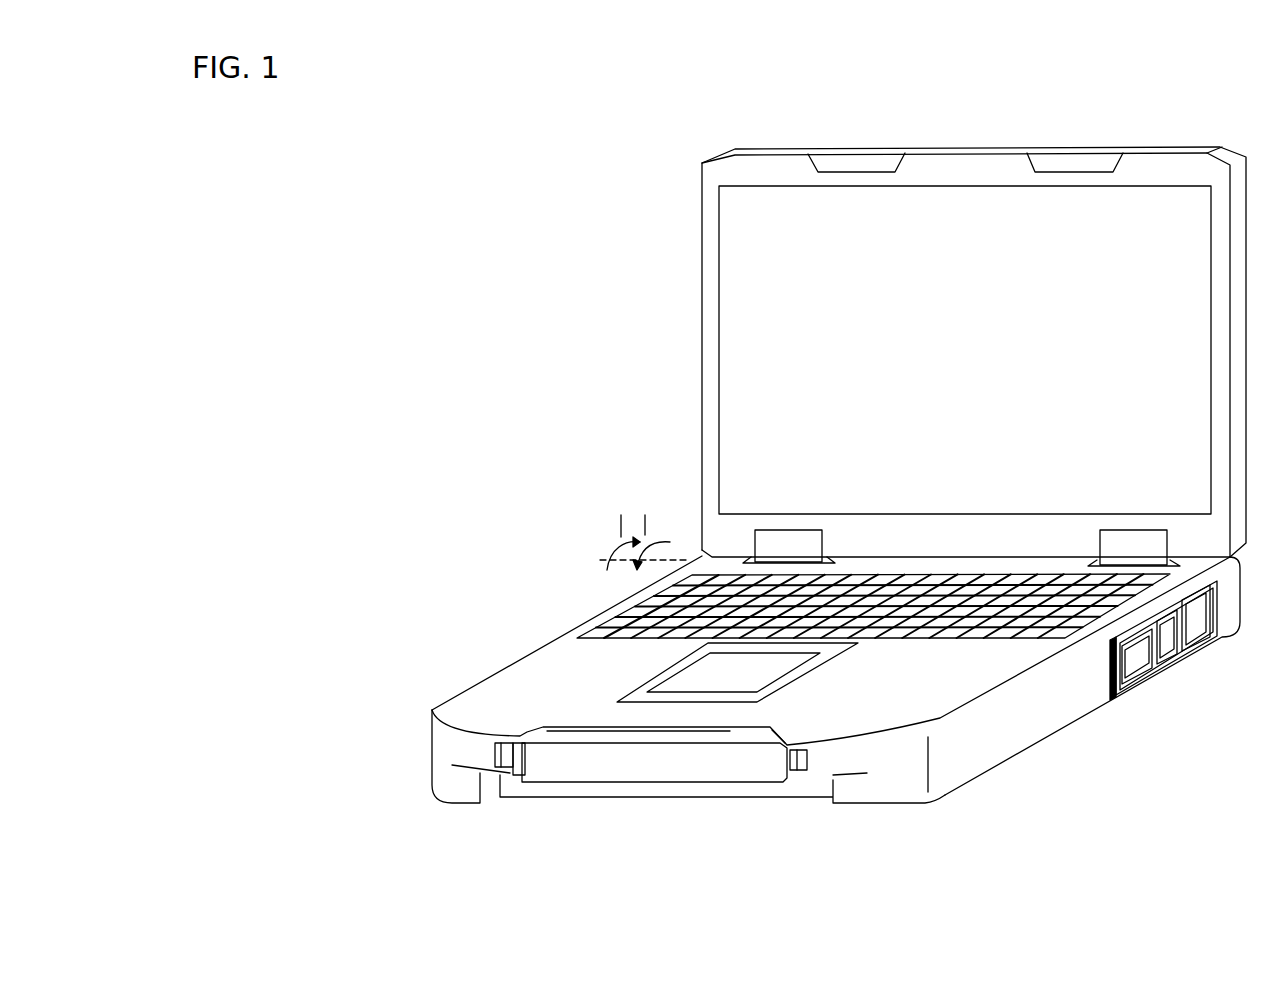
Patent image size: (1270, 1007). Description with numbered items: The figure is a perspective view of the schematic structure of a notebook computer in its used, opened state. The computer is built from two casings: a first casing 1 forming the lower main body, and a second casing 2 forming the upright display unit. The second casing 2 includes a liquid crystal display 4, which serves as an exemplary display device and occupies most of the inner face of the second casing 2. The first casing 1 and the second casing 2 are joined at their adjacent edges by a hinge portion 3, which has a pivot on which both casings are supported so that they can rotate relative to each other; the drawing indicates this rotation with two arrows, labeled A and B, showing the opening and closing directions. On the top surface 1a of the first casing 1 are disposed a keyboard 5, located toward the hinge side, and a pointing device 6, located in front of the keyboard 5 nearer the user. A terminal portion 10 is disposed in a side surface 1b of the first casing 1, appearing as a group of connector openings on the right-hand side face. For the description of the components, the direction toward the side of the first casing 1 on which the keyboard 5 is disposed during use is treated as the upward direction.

The first casing 1 is at (830, 475).
The top surface 1a is at (546, 692).
The side surface 1b is at (993, 732).
The second casing 2 is at (949, 352).
The hinge portion 3 is at (760, 547).
The liquid crystal display 4 is at (737, 285).
The keyboard 5 is at (612, 622).
The pointing device 6 is at (703, 673).
The terminal portion 10 is at (1193, 620).